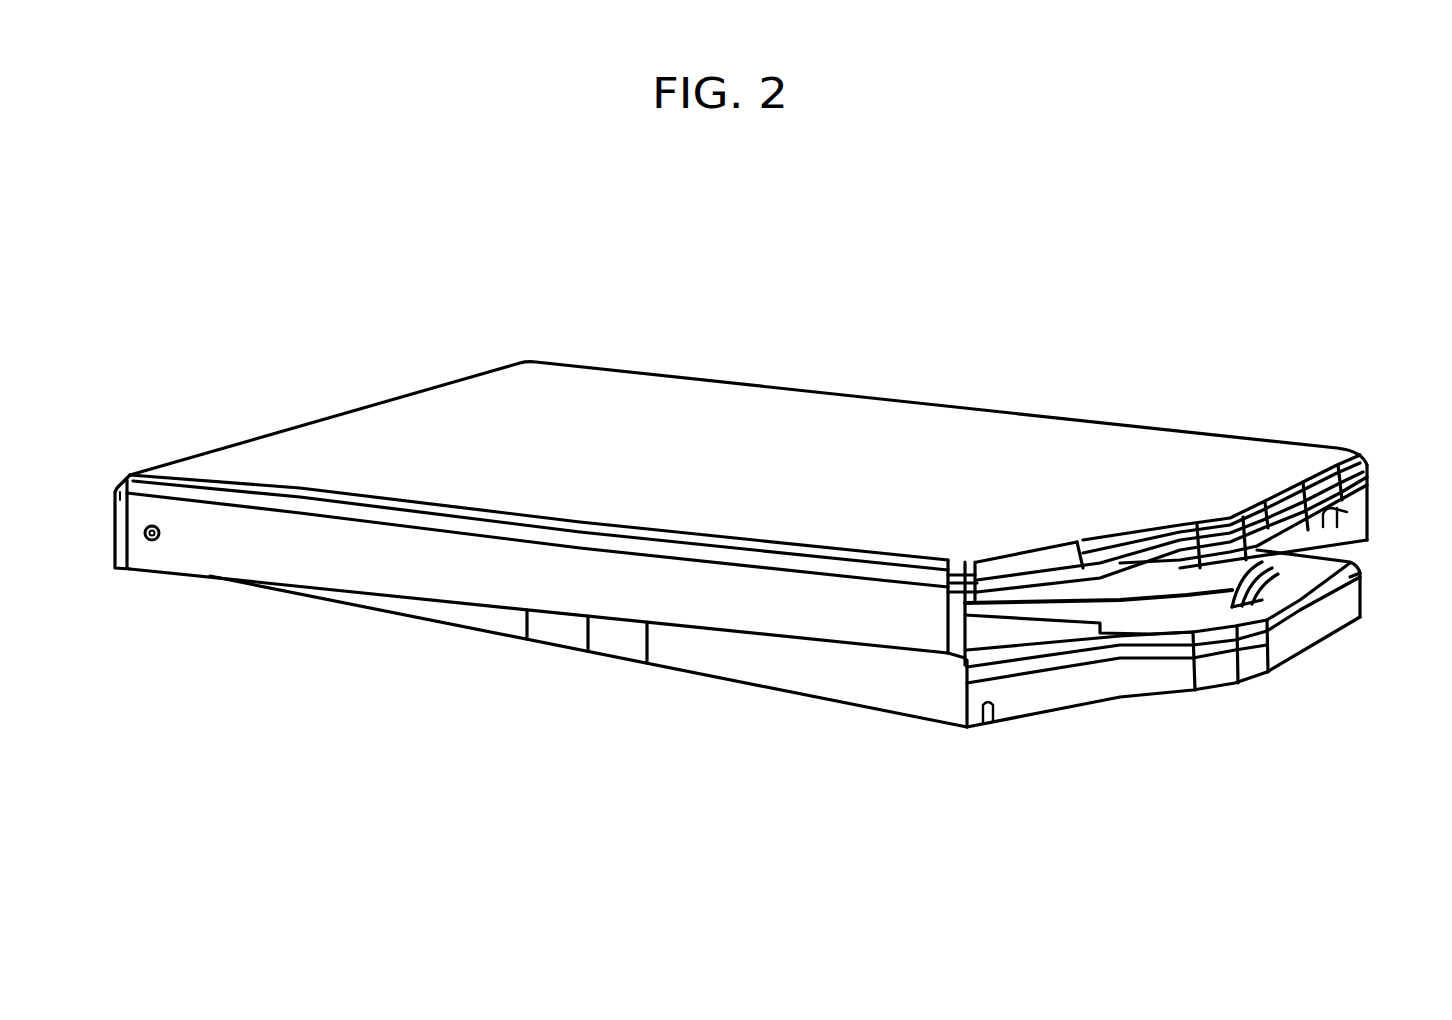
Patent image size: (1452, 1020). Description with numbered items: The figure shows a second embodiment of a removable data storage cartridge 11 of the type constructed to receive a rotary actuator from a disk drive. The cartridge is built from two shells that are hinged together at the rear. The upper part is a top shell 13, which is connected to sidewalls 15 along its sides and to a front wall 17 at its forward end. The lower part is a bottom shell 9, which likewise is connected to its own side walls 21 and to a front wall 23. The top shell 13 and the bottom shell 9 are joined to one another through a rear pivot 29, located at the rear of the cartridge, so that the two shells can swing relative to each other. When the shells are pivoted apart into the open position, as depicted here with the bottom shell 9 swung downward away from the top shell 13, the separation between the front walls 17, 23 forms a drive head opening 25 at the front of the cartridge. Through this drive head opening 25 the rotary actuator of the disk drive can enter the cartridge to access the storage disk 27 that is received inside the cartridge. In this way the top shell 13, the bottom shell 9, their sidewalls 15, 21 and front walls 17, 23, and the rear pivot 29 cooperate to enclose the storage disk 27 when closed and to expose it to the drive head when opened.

The bottom shell 9 is at (783, 669).
The data storage cartridge 11 is at (652, 428).
The top shell 13 is at (908, 467).
The sidewalls 15 is at (250, 538).
The front wall 17 is at (1373, 460).
The side walls 21 is at (906, 680).
The front wall 23 is at (1323, 623).
The drive head opening 25 is at (1378, 563).
The storage disk 27 is at (1175, 585).
The rear pivot 29 is at (167, 530).